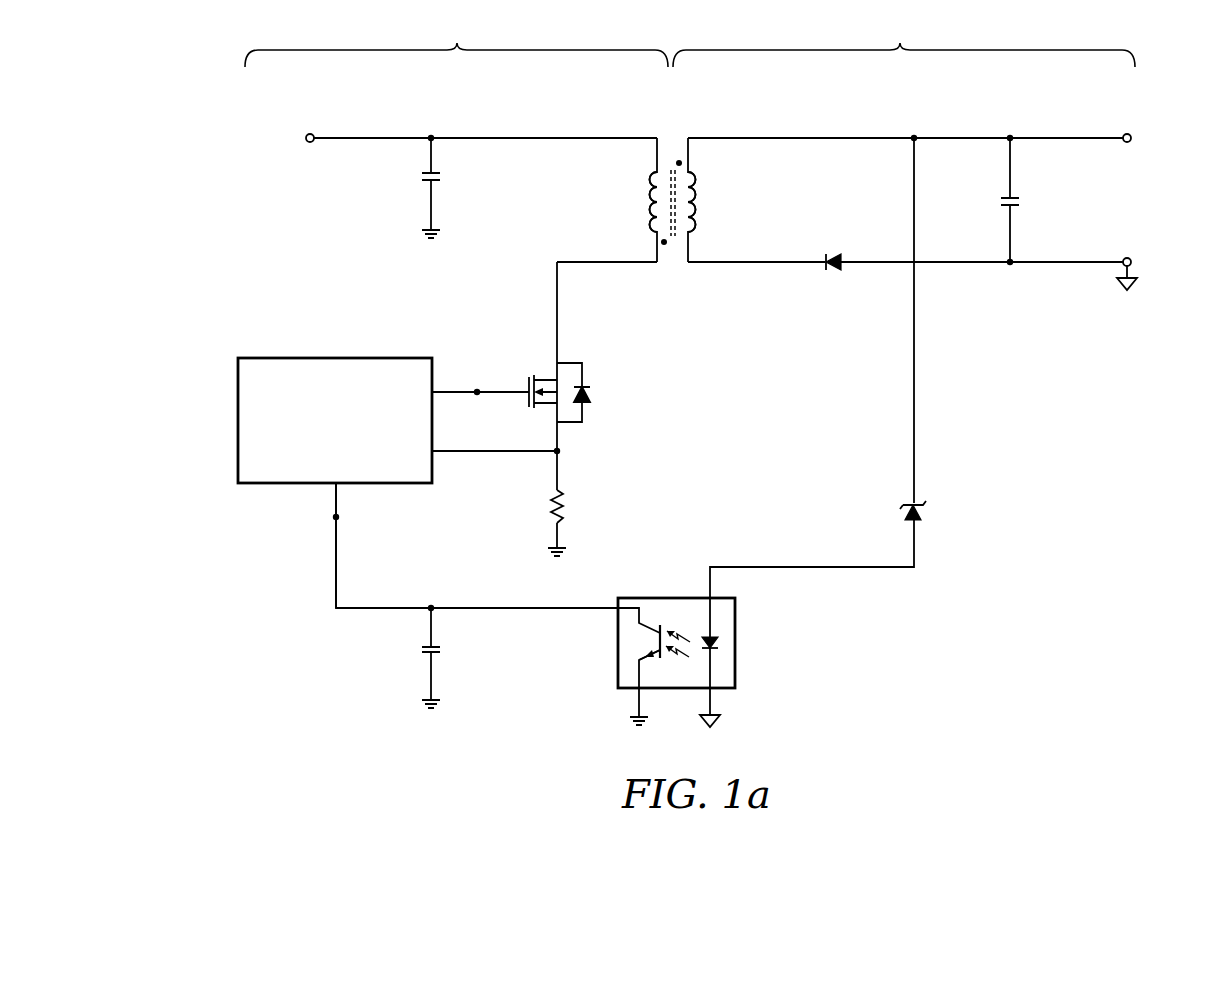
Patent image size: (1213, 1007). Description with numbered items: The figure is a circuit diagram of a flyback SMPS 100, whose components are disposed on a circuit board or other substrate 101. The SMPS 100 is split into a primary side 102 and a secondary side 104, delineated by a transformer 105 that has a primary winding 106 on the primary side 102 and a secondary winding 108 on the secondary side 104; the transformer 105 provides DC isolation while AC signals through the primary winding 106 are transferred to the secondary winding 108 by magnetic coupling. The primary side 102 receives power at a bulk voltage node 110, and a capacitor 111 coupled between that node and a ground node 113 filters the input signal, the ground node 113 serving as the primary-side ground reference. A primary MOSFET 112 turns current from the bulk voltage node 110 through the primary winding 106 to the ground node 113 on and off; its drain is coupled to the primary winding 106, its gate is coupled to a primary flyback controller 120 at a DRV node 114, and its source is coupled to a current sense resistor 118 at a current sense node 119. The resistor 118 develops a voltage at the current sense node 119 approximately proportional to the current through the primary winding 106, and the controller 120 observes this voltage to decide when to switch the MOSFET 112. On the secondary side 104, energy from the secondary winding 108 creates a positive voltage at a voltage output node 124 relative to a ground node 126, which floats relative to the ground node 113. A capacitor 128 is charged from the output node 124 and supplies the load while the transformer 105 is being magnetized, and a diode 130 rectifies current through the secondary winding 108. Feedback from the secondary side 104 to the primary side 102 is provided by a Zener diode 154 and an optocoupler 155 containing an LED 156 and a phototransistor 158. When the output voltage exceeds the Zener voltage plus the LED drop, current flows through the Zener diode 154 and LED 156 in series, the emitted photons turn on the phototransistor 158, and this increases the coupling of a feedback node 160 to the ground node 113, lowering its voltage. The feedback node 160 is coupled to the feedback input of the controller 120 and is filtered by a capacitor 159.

The flyback SMPS 100 is at (218, 150).
The substrate 101 is at (221, 257).
The primary side 102 is at (456, 43).
The secondary side 104 is at (904, 43).
The transformer 105 is at (673, 135).
The primary winding 106 is at (652, 196).
The secondary winding 108 is at (693, 196).
The bulk voltage node 110 is at (308, 143).
The capacitor 111 is at (424, 174).
The primary MOSFET 112 is at (567, 362).
The ground node 113 is at (441, 234).
The DRV node 114 is at (479, 388).
The current sense resistor 118 is at (562, 504).
The current sense node 119 is at (561, 450).
The primary flyback controller 120 is at (336, 357).
The voltage output node 124 is at (1131, 143).
The ground node 126 is at (1127, 257).
The capacitor 128 is at (1016, 201).
The diode 130 is at (833, 272).
The Zener diode 154 is at (920, 509).
The optocoupler 155 is at (675, 596).
The LED 156 is at (716, 640).
The phototransistor 158 is at (659, 632).
The capacitor 159 is at (438, 650).
The feedback node 160 is at (333, 517).